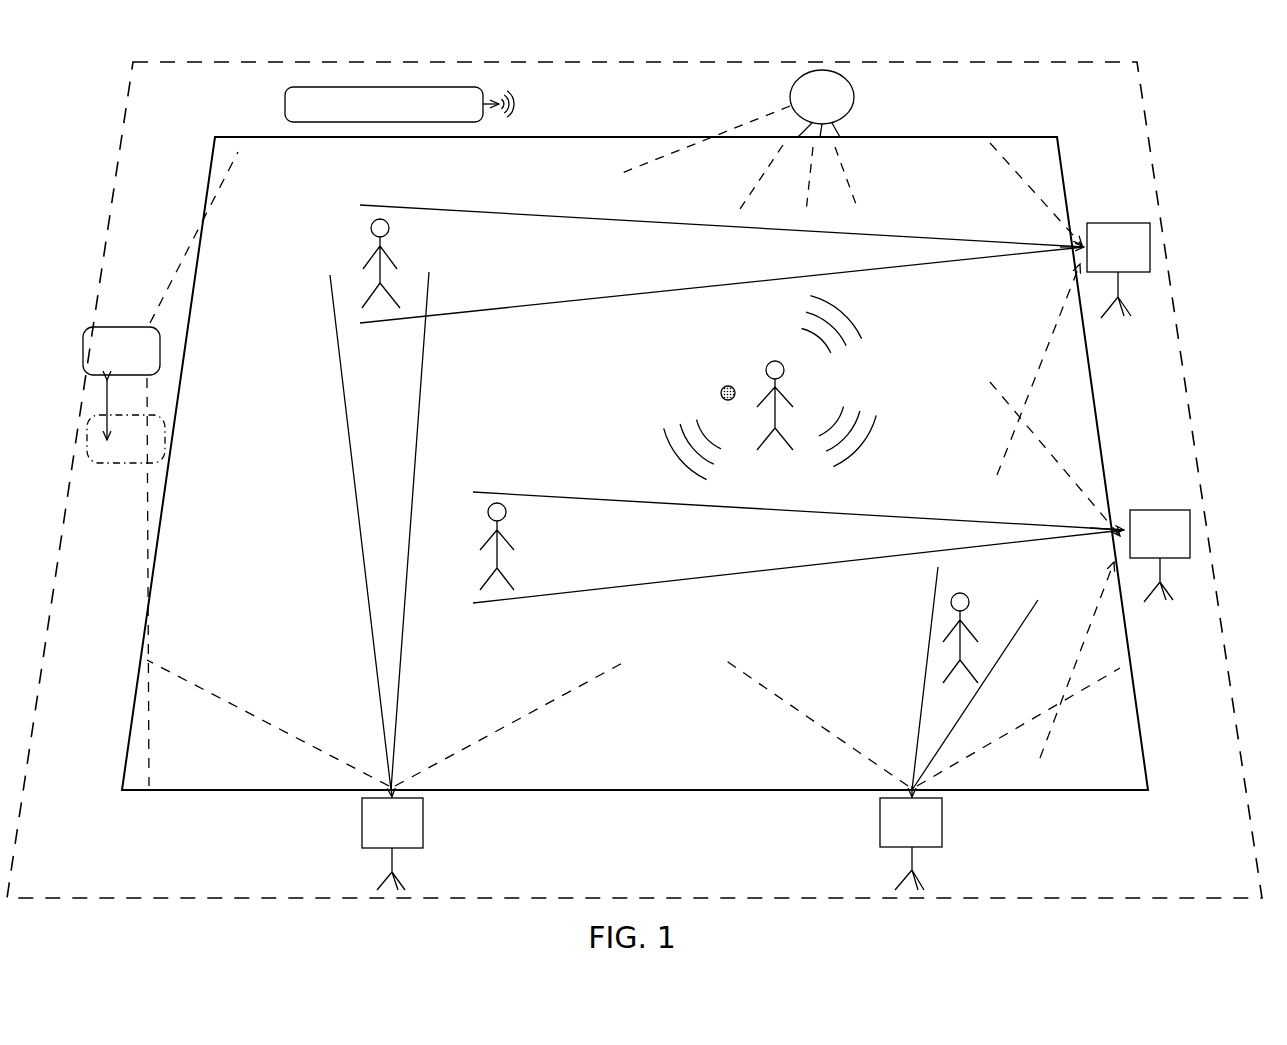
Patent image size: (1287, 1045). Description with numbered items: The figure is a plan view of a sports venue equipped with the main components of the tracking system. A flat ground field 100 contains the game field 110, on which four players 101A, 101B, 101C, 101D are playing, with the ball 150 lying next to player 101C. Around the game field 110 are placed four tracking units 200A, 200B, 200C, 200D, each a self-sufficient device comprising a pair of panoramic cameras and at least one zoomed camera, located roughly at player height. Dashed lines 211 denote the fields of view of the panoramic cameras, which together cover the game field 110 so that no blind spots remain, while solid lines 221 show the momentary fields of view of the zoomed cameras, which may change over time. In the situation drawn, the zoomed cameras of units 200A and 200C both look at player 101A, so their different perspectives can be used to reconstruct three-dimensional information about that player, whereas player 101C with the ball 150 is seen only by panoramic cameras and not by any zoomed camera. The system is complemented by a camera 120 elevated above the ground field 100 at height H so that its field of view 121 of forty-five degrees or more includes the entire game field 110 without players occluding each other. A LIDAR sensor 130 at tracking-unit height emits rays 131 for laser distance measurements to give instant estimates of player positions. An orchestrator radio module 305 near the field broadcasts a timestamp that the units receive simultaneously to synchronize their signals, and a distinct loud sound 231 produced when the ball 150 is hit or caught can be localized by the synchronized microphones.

The flat ground field 100 is at (610, 58).
The game field 110 is at (938, 135).
The orchestrator radio module 305 is at (399, 104).
The LIDAR sensor 130 is at (822, 103).
The rays 131 is at (848, 180).
The camera 120 is at (160, 307).
The field of view 121 is at (150, 522).
The player 101A is at (366, 254).
The player 101B is at (508, 532).
The player 101C is at (787, 392).
The player 101D is at (948, 627).
The ball 150 is at (719, 386).
The tracking unit 200A is at (392, 838).
The tracking unit 200B is at (911, 838).
The tracking unit 200C is at (1118, 270).
The tracking unit 200D is at (1160, 556).
The dashed lines 211 is at (728, 683).
The solid lines 221 is at (442, 318).
The sound 231 is at (864, 323).